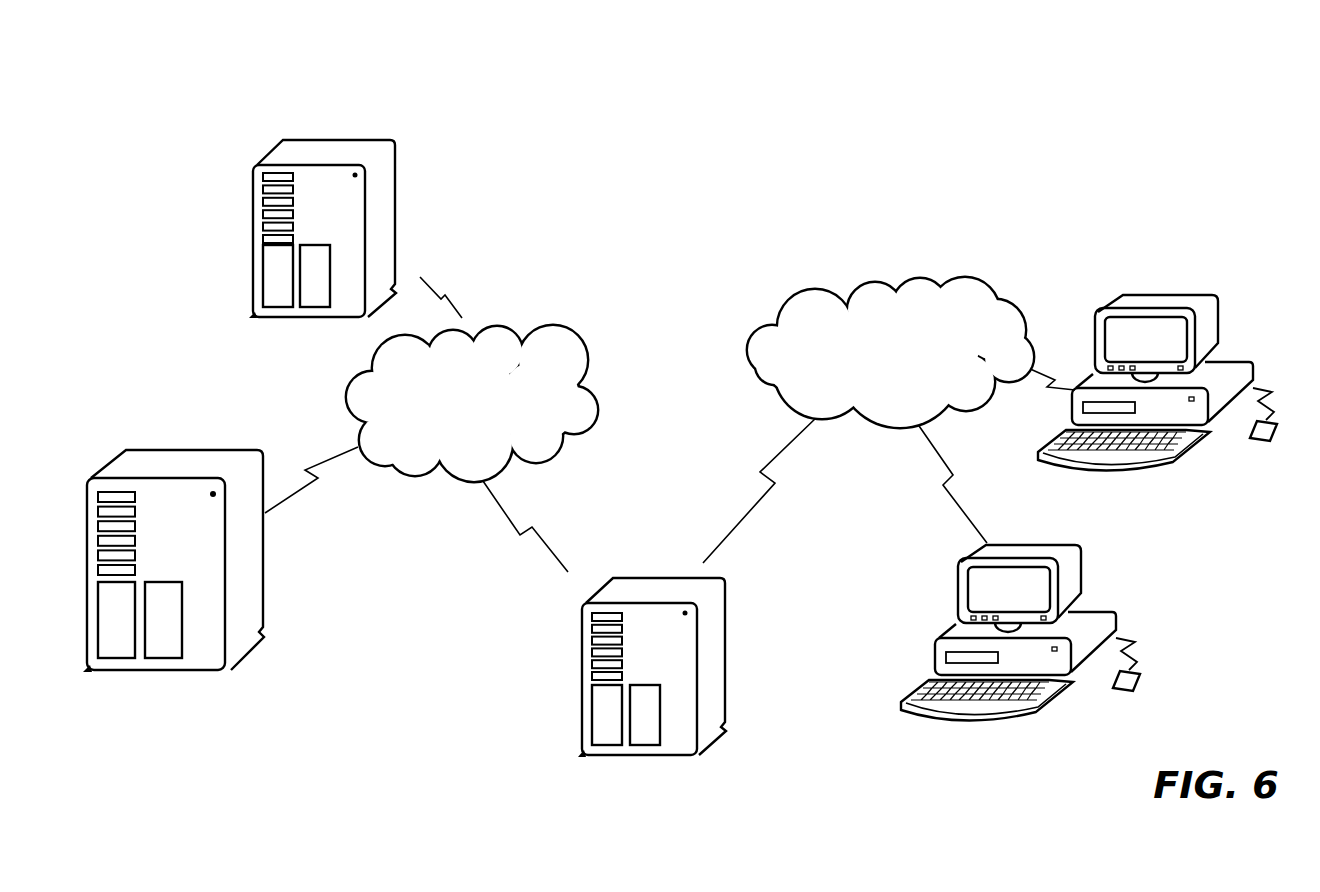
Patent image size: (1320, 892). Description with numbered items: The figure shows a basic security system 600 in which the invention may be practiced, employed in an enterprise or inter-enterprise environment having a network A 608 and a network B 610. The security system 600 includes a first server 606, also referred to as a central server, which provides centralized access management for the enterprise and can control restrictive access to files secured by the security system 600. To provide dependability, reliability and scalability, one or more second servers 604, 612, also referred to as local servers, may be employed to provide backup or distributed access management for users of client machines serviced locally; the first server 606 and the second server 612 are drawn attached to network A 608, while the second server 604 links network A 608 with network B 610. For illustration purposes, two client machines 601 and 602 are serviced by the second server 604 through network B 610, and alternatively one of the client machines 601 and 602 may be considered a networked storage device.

The security system 600 is at (229, 121).
The client machine 601 is at (1113, 610).
The client machine 602 is at (1250, 358).
The second server 604 is at (633, 557).
The first server 606 is at (180, 455).
The network A 608 is at (548, 345).
The network B 610 is at (920, 293).
The second server 612 is at (396, 222).